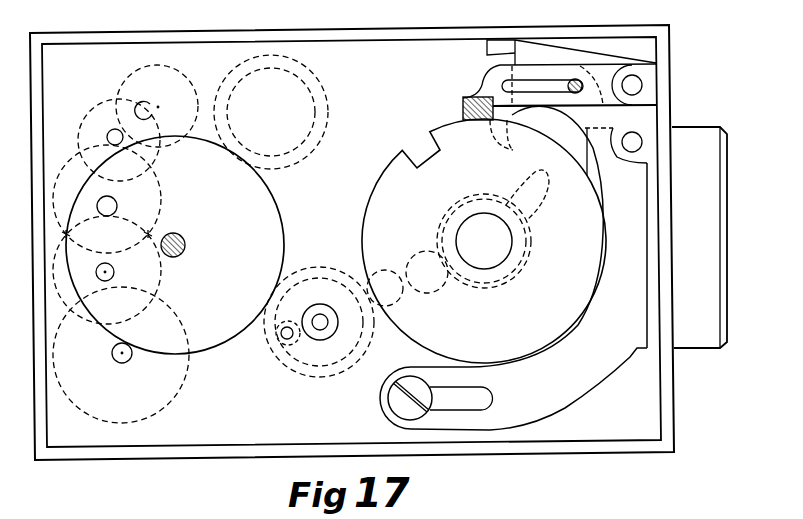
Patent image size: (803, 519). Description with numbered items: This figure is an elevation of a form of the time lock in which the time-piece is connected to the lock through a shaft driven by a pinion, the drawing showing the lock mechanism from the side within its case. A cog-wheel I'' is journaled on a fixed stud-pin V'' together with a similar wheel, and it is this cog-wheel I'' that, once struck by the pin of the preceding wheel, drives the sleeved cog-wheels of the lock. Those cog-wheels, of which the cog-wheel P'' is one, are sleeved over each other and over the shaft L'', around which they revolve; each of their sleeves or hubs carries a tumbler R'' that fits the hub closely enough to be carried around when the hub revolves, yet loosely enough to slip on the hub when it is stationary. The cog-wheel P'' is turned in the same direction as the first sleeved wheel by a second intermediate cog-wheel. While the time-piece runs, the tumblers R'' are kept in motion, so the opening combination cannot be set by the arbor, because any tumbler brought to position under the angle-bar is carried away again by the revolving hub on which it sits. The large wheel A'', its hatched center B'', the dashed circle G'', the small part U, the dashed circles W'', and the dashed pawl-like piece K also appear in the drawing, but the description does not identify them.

The main gear wheel A'' is at (175, 245).
The gear shaft B'' is at (185, 246).
The gear G'' is at (121, 355).
The cog-wheel I'' is at (275, 343).
The bushing U is at (293, 344).
The stud-pin V'' is at (319, 322).
The rollers W'' is at (407, 278).
The tumbler R'' is at (484, 241).
The pawl K is at (527, 195).
The shaft L'' is at (484, 241).
The cog-wheel P'' is at (484, 241).